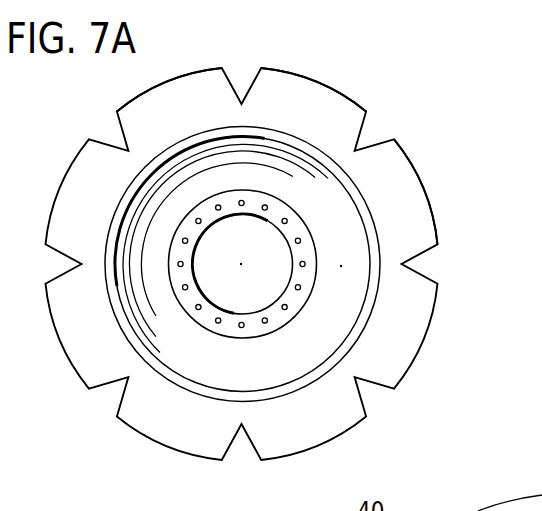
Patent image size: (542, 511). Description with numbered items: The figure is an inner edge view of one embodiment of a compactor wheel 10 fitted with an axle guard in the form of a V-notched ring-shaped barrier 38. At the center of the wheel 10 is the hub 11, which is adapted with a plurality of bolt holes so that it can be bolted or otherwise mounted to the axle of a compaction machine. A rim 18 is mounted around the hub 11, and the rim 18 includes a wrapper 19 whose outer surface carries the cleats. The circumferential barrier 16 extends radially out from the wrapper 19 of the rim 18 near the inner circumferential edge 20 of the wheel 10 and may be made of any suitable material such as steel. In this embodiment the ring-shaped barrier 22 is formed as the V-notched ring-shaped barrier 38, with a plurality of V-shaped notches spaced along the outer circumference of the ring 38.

The compactor wheel 10 is at (120, 103).
The V-notched ring-shaped barrier 38 is at (152, 85).
The circumferential barrier 16 is at (339, 92).
The ring-shaped barrier 22 is at (414, 156).
The inner circumferential edge 20 is at (378, 229).
The wrapper 19 is at (363, 327).
The rim 18 is at (219, 142).
The hub 11 is at (288, 285).